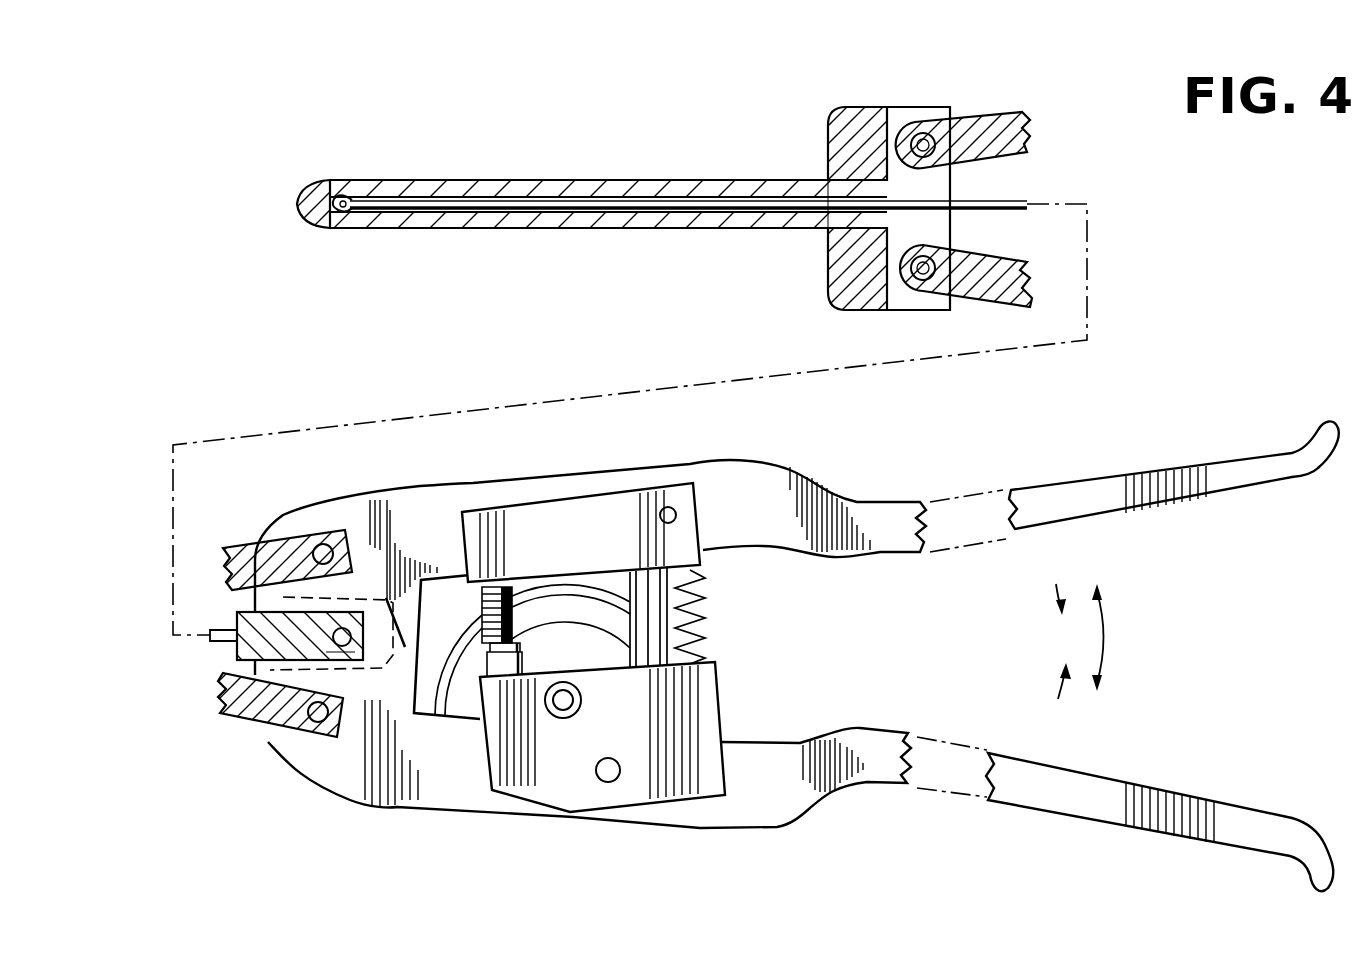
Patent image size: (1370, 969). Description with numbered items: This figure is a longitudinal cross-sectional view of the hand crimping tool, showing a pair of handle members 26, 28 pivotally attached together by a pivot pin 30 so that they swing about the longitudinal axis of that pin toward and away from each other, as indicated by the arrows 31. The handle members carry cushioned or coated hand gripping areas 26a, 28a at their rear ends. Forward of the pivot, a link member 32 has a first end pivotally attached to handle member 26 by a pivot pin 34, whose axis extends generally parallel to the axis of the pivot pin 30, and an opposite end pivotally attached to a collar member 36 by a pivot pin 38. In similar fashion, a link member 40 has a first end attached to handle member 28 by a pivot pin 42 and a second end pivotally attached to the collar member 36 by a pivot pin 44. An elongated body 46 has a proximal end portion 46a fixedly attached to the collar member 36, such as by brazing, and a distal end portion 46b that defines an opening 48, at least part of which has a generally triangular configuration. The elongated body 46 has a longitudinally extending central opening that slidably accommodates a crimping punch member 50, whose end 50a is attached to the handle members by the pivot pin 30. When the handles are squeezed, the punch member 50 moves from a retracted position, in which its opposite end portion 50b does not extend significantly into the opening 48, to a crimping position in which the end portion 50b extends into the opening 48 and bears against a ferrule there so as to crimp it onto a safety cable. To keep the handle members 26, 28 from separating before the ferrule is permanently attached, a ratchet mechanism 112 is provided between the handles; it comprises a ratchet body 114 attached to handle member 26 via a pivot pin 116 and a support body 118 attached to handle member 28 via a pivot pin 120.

The handle member 26 is at (850, 502).
The hand gripping area 26a is at (1210, 472).
The handle member 28 is at (790, 798).
The hand gripping area 28a is at (1199, 806).
The pivot pin 30 is at (350, 634).
The arrows 31 is at (1058, 689).
The link member 32 is at (1000, 122).
The pivot pin 34 is at (322, 553).
The collar member 36 is at (837, 132).
The pivot pin 38 is at (923, 143).
The link member 40 is at (248, 720).
The pivot pin 42 is at (970, 292).
The pivot pin 44 is at (923, 270).
The elongated body 46 is at (625, 183).
The proximal end portion 46a is at (853, 193).
The distal end portion 46b is at (337, 185).
The opening 48 is at (340, 218).
The crimping punch member 50 is at (995, 200).
The end of crimping punch member 50a is at (318, 652).
The end portion of crimping punch member 50b is at (347, 194).
The ratchet mechanism 112 is at (730, 662).
The ratchet body 114 is at (705, 560).
The pivot pin 116 is at (674, 512).
The support body 118 is at (707, 707).
The pivot pin 120 is at (608, 782).